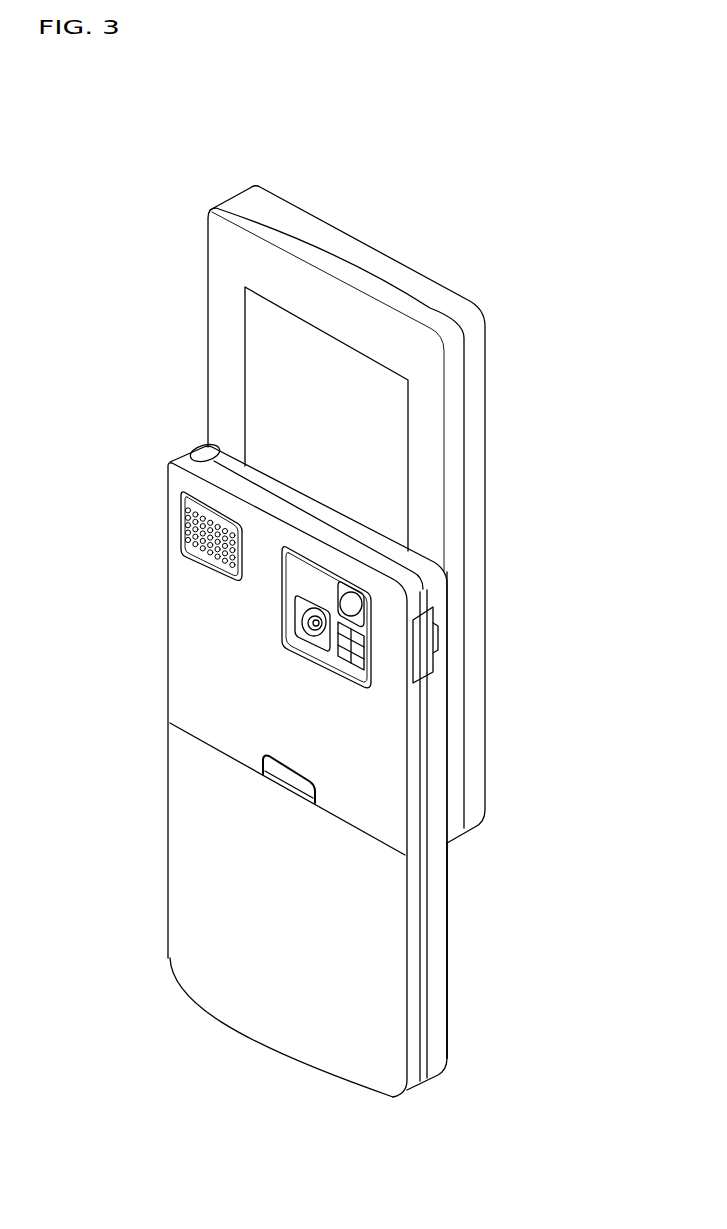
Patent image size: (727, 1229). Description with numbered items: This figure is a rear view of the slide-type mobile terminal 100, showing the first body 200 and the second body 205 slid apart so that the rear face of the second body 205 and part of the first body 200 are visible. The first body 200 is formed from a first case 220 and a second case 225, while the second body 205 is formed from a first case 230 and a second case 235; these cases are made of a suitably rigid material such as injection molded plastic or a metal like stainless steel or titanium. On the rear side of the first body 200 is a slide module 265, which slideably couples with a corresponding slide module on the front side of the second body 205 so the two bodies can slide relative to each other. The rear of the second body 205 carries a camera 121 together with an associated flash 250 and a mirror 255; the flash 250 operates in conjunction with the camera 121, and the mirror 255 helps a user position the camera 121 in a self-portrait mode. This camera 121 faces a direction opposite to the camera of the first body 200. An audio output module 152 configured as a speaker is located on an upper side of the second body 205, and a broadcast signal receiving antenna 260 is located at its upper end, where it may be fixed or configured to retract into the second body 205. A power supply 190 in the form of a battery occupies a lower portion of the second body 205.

The mobile terminal 100 is at (462, 219).
The first body 200 is at (178, 327).
The second body 205 is at (146, 636).
The first case 220 is at (250, 192).
The second case 225 is at (233, 208).
The slide module 265 is at (245, 400).
The broadcast signal receiving antenna 260 is at (203, 452).
The audio output module 152 is at (197, 532).
The mirror 255 is at (352, 602).
The flash 250 is at (373, 681).
The camera 121 is at (318, 632).
The power supply 190 is at (185, 810).
The second case 235 is at (413, 813).
The first case 230 is at (438, 870).